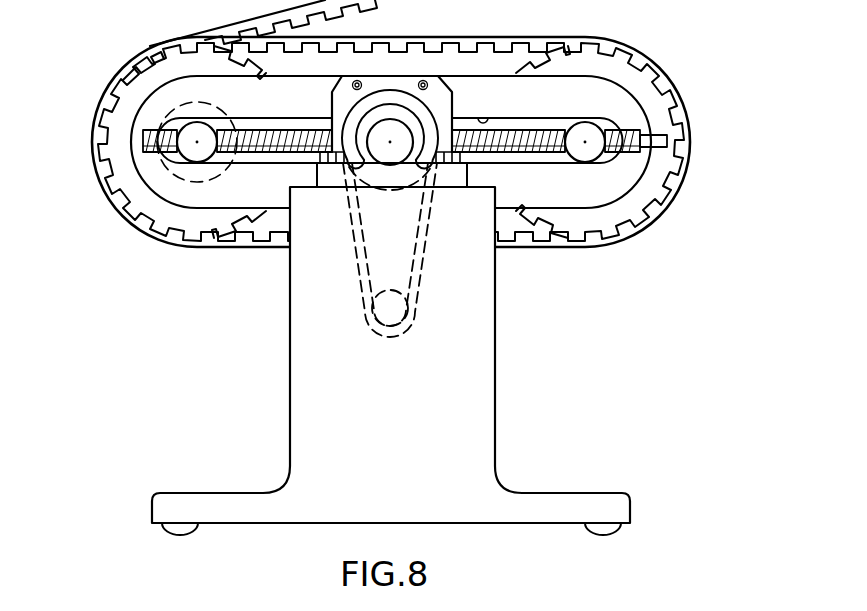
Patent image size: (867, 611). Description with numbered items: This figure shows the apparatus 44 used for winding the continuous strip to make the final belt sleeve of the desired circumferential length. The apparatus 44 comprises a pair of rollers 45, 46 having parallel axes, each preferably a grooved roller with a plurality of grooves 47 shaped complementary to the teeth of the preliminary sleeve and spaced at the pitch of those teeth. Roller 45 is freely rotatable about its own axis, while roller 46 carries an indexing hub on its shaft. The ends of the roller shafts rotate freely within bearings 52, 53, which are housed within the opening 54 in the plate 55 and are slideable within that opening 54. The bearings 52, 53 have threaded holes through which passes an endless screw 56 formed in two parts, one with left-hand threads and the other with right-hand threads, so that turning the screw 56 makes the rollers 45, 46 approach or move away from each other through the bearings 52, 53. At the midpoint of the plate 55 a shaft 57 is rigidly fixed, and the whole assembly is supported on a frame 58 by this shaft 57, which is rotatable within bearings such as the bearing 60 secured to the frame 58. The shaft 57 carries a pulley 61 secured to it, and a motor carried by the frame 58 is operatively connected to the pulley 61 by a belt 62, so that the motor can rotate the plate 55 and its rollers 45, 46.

The apparatus 44 is at (394, 158).
The roller 45 is at (665, 107).
The roller 46 is at (127, 115).
The grooves 47 is at (677, 160).
The bearing 52 is at (590, 125).
The bearing 53 is at (180, 125).
The opening 54 is at (490, 127).
The plate 55 is at (480, 83).
The endless screw 56 is at (547, 148).
The shaft 57 is at (393, 130).
The frame 58 is at (480, 408).
The bearing 60 is at (318, 168).
The pulley 61 is at (357, 107).
The belt 62 is at (427, 260).